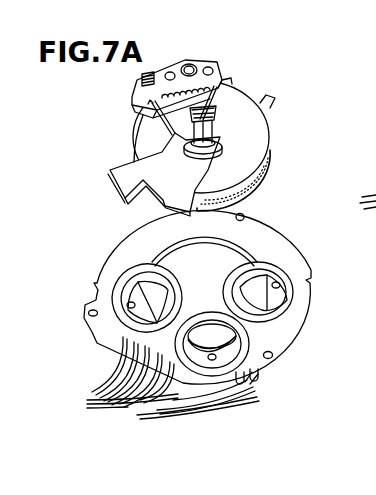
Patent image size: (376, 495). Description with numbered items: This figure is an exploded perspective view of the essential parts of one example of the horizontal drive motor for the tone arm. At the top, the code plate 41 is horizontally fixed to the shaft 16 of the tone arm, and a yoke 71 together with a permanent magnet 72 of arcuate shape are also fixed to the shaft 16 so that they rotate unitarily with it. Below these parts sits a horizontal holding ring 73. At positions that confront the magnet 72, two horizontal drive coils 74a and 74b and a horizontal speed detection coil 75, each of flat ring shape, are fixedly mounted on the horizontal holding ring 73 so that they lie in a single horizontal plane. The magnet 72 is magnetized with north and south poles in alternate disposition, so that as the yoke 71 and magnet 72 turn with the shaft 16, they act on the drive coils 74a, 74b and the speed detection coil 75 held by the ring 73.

The shaft 16 is at (214, 108).
The code plate 41 is at (162, 153).
The yoke 71 is at (258, 136).
The permanent magnet 72 is at (254, 192).
The horizontal holding ring 73 is at (292, 252).
The horizontal drive coil 74a is at (118, 298).
The horizontal drive coil 74b is at (296, 340).
The horizontal speed detection coil 75 is at (280, 303).